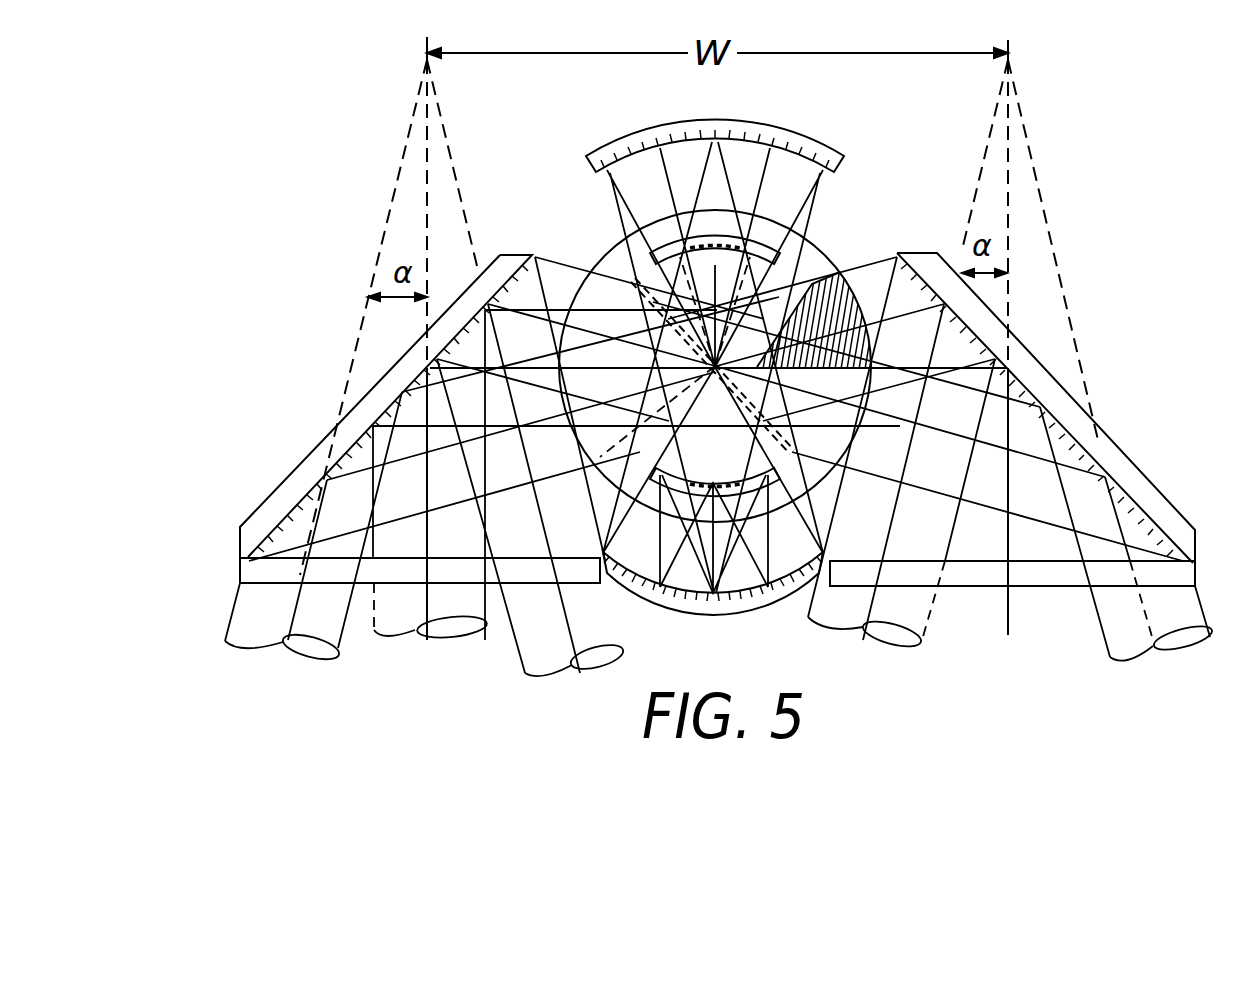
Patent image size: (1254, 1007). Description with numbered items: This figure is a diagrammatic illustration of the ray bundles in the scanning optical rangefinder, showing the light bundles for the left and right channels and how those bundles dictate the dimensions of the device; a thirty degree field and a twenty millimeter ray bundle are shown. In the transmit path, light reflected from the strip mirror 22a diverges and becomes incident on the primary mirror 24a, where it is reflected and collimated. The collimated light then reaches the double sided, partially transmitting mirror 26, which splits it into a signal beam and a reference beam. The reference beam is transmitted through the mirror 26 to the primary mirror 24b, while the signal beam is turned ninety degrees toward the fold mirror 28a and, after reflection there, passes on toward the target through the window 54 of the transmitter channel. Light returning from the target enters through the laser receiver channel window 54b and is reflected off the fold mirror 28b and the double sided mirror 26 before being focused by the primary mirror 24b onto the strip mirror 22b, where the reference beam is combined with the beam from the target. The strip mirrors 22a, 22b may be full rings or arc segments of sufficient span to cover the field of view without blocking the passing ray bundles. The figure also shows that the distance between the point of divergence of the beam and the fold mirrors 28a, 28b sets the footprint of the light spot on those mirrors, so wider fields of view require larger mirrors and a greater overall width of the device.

The strip mirror 22a is at (775, 253).
The strip mirror 22b is at (785, 478).
The primary mirror 24a is at (724, 118).
The primary mirror 24b is at (730, 612).
The double sided, partially transmitting mirror 26 is at (628, 284).
The fold mirror 28a is at (1128, 462).
The fold mirror 28b is at (293, 477).
The window 54 is at (1190, 573).
The laser receiver channel window 54b is at (240, 572).